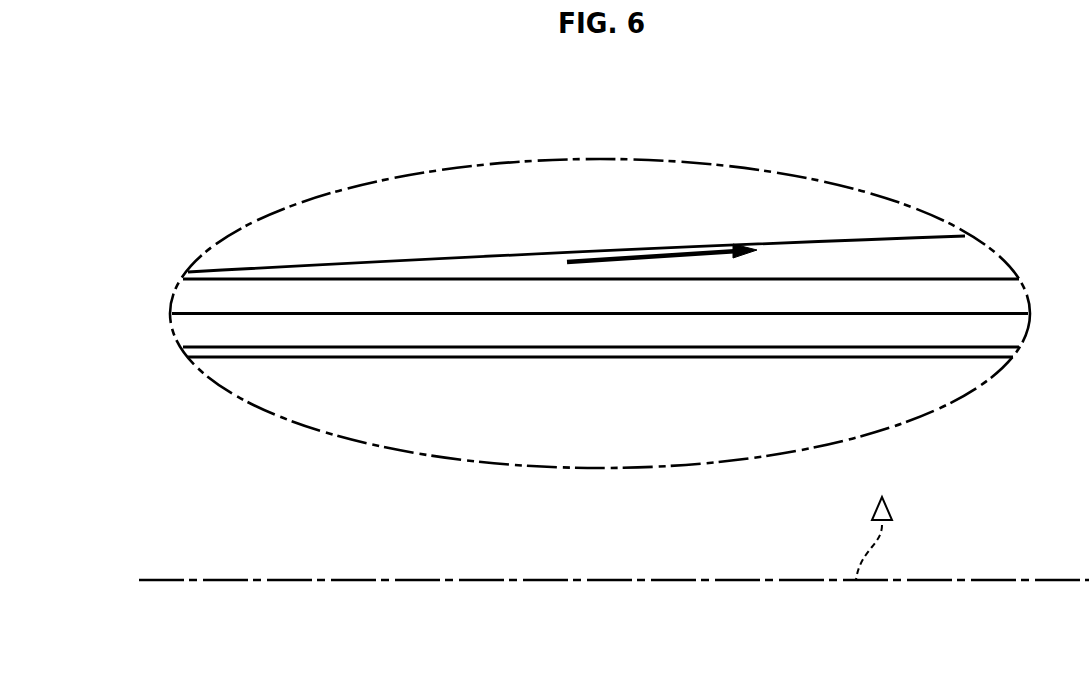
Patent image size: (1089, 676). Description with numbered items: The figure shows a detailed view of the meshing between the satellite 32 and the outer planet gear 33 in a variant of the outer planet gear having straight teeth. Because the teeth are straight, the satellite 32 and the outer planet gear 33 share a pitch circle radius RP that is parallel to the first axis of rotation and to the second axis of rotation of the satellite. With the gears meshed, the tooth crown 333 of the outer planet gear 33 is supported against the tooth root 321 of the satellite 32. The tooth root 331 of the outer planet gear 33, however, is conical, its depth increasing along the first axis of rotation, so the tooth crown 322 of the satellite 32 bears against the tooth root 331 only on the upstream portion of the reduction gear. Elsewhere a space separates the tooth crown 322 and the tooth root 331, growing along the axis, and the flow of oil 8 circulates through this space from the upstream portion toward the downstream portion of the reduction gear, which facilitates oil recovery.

The flow of oil 8 is at (657, 250).
The outer planet gear 33 is at (613, 218).
The satellite 32 is at (613, 418).
The tooth root 331 is at (828, 238).
The tooth crown 322 is at (893, 278).
The pitch circle radius RP is at (937, 313).
The tooth crown 333 is at (963, 347).
The tooth root 321 is at (962, 357).